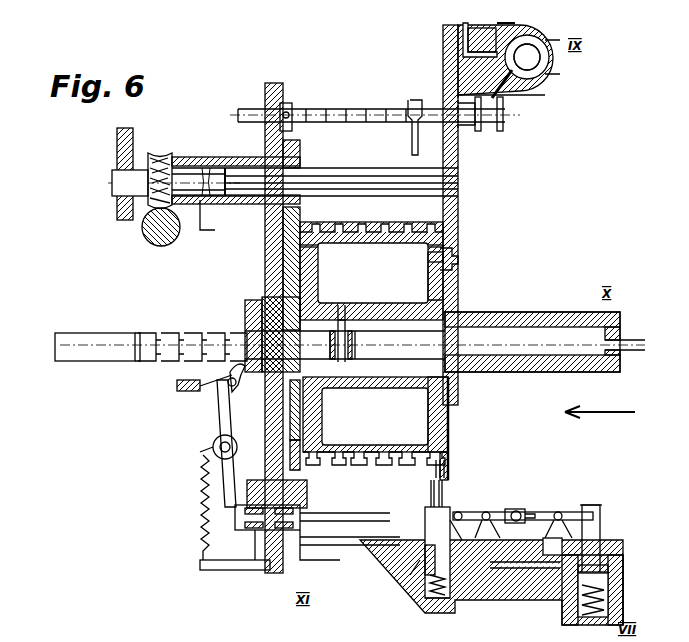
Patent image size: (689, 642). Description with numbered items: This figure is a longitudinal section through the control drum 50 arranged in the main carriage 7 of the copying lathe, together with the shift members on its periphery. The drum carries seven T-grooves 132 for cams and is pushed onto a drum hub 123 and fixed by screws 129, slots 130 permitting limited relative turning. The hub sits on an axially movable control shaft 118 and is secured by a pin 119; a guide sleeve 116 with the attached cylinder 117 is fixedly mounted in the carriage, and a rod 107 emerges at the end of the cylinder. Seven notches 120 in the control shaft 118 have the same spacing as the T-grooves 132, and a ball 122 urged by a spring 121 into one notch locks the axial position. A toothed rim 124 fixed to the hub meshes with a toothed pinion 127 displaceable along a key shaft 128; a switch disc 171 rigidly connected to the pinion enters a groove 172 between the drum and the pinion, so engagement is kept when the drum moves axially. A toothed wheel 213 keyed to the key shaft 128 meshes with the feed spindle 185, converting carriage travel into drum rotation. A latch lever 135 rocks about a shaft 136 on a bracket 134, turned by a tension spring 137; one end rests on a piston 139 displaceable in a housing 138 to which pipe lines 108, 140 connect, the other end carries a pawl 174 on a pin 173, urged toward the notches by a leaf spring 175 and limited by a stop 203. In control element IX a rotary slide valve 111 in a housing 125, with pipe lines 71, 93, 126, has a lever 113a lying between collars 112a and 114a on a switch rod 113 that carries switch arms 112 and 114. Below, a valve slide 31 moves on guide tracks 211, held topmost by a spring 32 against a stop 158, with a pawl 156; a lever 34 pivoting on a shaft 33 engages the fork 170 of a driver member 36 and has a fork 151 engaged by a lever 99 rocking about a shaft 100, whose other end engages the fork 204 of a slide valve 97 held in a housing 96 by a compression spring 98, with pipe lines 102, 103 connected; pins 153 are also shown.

The main carriage 7 is at (117, 204).
The toothed wheel 213 is at (167, 158).
The feed spindle 185 is at (143, 233).
The switch disc 171 is at (292, 160).
The key shaft 128 is at (456, 188).
The toothed pinion 127 is at (258, 204).
The switch arm 112 is at (287, 103).
The switch arm 114 is at (410, 148).
The switch rod 113 is at (445, 110).
The pipe line 93 is at (512, 59).
The rotary slide valve 111 is at (530, 55).
The pipe line 71 is at (482, 40).
The pipe line 126 is at (515, 24).
The lever 113a is at (500, 82).
The housing 125 is at (502, 99).
The collar 112a is at (503, 125).
The collar 114a is at (480, 128).
The toothed rim 124 is at (300, 238).
The guide sleeve 116 is at (283, 290).
The slot 130 is at (445, 248).
The screw 129 is at (458, 256).
The pin 119 is at (348, 325).
The control shaft 118 is at (105, 340).
The notch 120 is at (140, 361).
The pawl 174 is at (178, 340).
The ball 122 is at (245, 330).
The spring 121 is at (262, 325).
The cylinder 117 is at (528, 318).
The rod 107 is at (628, 344).
The drum hub 123 is at (448, 380).
The T-groove 132 is at (415, 468).
The control drum 50 is at (448, 426).
The pins 153 is at (436, 488).
The groove 172 is at (312, 466).
The piston 139 is at (250, 540).
The pipe line 108 is at (354, 519).
The pipe line 140 is at (340, 546).
The housing 138 is at (300, 560).
The stop 158 is at (420, 565).
The bracket 134 is at (215, 420).
The shaft 136 is at (212, 449).
The latch lever 135 is at (225, 483).
The tension spring 137 is at (200, 520).
The stop 203 is at (177, 386).
The pin 173 is at (226, 385).
The leaf spring 175 is at (243, 380).
The valve slide 31 is at (440, 560).
The guide track 211 is at (448, 578).
The spring 32 is at (440, 598).
The pawl 156 is at (444, 500).
The fork 170 is at (470, 512).
The driver member 36 is at (462, 512).
The shaft 33 is at (490, 510).
The lever 34 is at (520, 508).
The fork 151 is at (540, 510).
The lever 99 is at (560, 510).
The shaft 100 is at (590, 505).
The fork 204 is at (598, 505).
The pipe line 102 is at (560, 566).
The housing 96 is at (623, 610).
The slide valve 97 is at (623, 560).
The compression spring 98 is at (582, 600).
The pipe line 103 is at (608, 575).